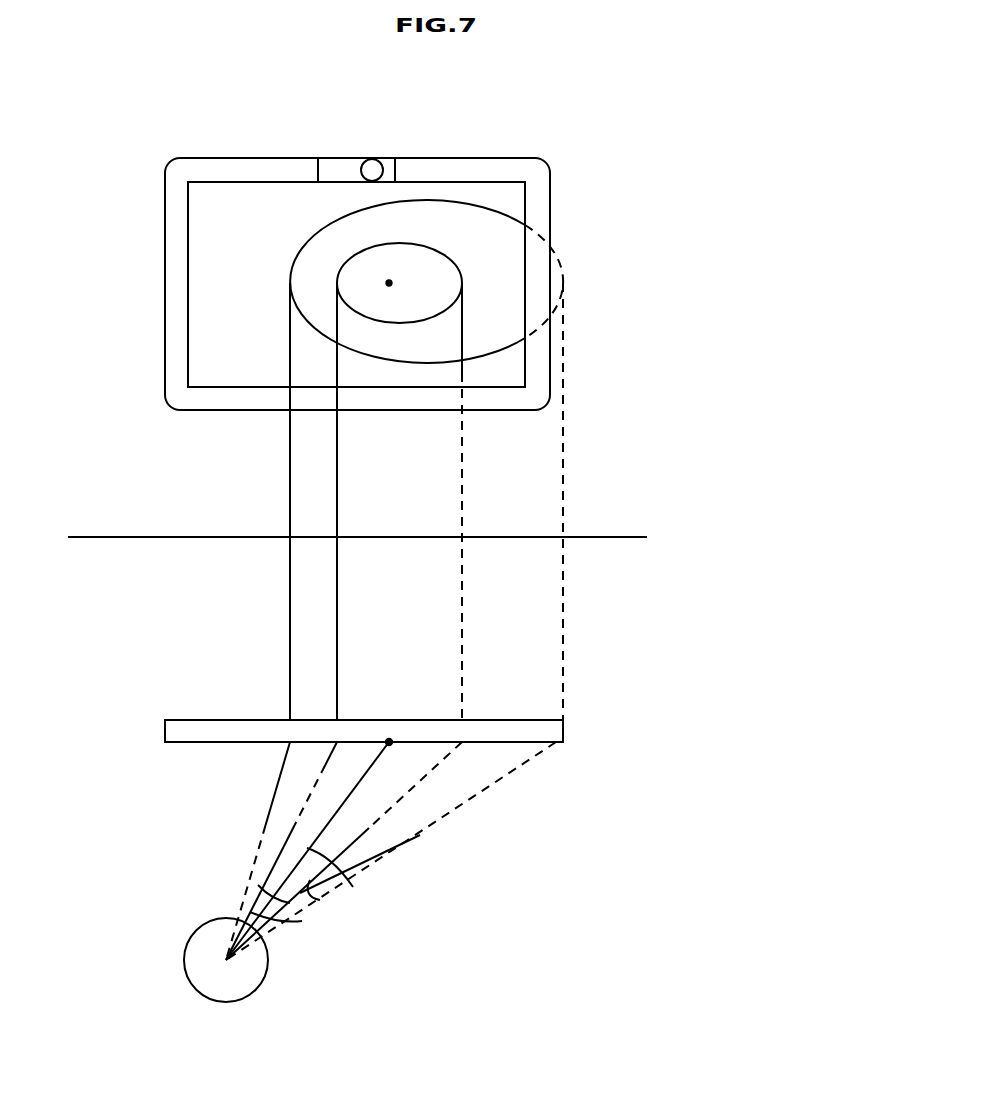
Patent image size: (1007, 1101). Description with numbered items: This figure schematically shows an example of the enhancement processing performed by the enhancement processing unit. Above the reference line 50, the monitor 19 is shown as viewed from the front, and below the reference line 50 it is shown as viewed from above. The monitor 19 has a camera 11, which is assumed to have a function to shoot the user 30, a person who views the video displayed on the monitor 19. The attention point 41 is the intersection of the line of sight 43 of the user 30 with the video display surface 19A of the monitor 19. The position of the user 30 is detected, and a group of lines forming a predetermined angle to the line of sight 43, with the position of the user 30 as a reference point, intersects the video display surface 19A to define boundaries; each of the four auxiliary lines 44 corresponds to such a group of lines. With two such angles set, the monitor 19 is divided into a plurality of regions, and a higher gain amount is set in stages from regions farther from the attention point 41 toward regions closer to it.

The camera 11 is at (332, 163).
The monitor 19 is at (537, 157).
The video display surface 19A is at (198, 357).
The attention point 41 is at (389, 283).
The reference line 50 is at (607, 537).
The line of sight 43 is at (355, 880).
The auxiliary line 44 is at (275, 897).
The user 30 is at (222, 1002).